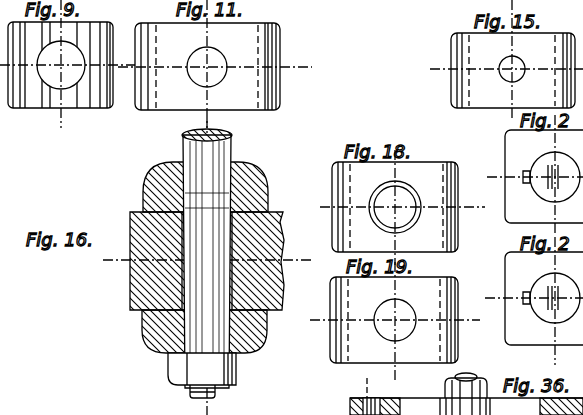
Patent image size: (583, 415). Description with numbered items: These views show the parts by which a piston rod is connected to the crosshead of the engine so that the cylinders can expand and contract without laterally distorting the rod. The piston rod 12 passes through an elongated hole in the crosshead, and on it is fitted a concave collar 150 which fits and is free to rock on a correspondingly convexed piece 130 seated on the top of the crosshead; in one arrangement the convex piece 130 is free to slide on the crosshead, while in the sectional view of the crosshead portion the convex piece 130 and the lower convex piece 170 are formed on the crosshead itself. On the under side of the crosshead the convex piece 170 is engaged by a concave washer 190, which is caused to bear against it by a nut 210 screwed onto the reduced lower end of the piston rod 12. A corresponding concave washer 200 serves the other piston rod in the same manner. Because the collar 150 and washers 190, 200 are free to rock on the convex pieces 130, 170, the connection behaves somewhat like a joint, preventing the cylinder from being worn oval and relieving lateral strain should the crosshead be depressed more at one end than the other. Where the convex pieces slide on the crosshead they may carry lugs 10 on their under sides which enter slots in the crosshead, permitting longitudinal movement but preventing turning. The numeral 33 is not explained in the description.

In FIG. 16, the piston rod 12 is at (195, 150).
In FIG. 16, the convex piece 130 is at (262, 205).
In FIG. 20, the convex piece 130 is at (521, 142).
In FIG. 16, the concave collar 150 is at (249, 172).
In FIG. 18, the concave collar 150 is at (418, 235).
In FIG. 9, the convex piece 170 is at (100, 30).
In FIG. 16, the convex piece 170 is at (153, 318).
In FIG. 21, the convex piece 170 is at (509, 333).
In FIG. 11, the concave washer 190 is at (246, 90).
In FIG. 16, the concave washer 190 is at (147, 347).
In FIG. 19, the concave washer 190 is at (357, 340).
In FIG. 15, the concave washer 200 is at (474, 89).
In FIG. 16, the nut 210 is at (198, 368).
In FIG. 20, the lug 10 is at (527, 177).
In FIG. 21, the lug 10 is at (527, 299).
In FIG. 36, the block 33 is at (386, 406).